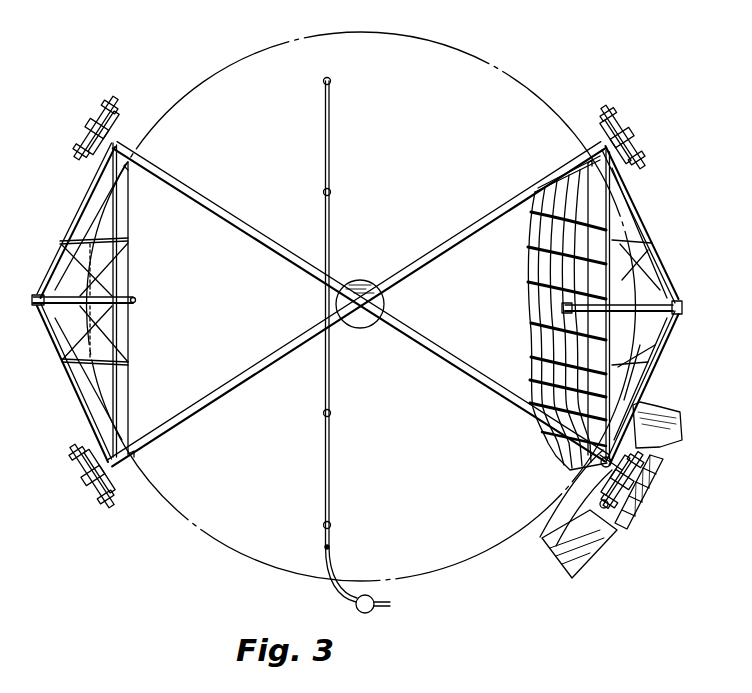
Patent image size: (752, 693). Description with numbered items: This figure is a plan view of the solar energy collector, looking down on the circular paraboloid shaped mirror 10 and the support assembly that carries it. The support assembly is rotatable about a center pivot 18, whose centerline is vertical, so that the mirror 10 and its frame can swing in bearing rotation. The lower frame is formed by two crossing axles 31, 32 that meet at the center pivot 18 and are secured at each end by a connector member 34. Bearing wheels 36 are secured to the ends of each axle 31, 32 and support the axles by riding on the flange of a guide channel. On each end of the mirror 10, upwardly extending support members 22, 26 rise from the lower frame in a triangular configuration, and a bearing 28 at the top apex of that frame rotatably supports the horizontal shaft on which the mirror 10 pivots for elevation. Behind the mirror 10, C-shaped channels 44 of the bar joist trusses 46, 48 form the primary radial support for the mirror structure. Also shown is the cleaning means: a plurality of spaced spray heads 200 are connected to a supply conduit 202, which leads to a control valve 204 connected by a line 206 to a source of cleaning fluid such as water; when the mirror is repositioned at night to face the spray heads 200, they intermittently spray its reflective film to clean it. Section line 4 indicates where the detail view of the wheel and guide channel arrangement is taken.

The circular paraboloid shaped mirror 10 is at (550, 176).
The center pivot 18 is at (384, 301).
The upwardly extending support member 22 is at (668, 340).
The upwardly extending support member 26 is at (650, 226).
The bearing 28 is at (681, 304).
The axle 31 is at (270, 365).
The axle 32 is at (275, 243).
The connector member 34 is at (112, 176).
The bearing wheel 36 is at (600, 136).
The C-shaped channel 44 is at (640, 504).
The bar joist truss 46 is at (662, 468).
The bar joist truss 48 is at (652, 488).
The spray head 200 is at (331, 84).
The supply conduit 202 is at (330, 480).
The control valve 204 is at (368, 614).
The line 206 is at (379, 598).
The section line for FIG. 4 is at (550, 457).